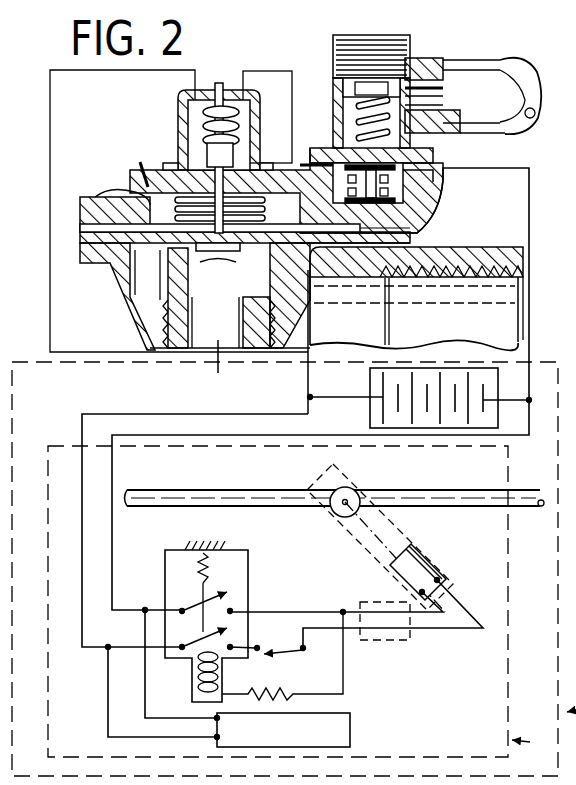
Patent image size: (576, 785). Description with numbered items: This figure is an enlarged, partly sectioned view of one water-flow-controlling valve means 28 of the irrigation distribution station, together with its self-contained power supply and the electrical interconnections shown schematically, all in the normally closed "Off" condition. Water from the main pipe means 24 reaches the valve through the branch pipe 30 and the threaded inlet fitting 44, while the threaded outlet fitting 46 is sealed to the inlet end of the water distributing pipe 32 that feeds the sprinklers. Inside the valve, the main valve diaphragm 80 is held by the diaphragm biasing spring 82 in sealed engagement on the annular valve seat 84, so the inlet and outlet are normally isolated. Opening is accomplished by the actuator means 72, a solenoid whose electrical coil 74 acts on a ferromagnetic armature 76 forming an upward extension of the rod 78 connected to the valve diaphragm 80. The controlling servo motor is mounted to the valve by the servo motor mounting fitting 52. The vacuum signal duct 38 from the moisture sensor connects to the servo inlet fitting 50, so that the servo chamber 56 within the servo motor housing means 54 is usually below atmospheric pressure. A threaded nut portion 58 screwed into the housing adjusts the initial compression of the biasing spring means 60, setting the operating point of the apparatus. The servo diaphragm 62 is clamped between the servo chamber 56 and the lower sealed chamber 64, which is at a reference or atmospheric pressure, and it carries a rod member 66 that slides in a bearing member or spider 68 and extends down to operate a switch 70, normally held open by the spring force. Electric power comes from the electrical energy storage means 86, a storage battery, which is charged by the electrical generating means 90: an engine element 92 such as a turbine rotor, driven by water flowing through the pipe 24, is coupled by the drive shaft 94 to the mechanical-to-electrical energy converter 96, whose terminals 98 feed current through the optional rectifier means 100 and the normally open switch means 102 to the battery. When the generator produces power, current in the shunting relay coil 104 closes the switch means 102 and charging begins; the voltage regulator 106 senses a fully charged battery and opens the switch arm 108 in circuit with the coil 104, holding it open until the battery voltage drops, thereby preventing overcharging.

The pressurized-liquid-transmission main pipe means 24 is at (223, 497).
The water-flow-controlling valve means 28 is at (110, 293).
The branch pipe 30 is at (227, 340).
The water distributing pipe 32 is at (482, 273).
The vacuum signal duct 38 is at (520, 82).
The threaded inlet fitting 44 is at (222, 283).
The threaded outlet fitting 46 is at (370, 293).
The servo inlet fitting 50 is at (443, 77).
The servo motor mounting fitting 52 is at (440, 173).
The servo motor housing means 54 is at (342, 147).
The servo chamber 56 is at (348, 90).
The threaded nut portion 58 is at (400, 37).
The biasing spring means 60 is at (407, 73).
The servo diaphragm 62 is at (317, 140).
The lower sealed chamber 64 is at (317, 160).
The rod member 66 is at (433, 215).
The bearing member or spider 68 is at (407, 182).
The switch 70 is at (420, 232).
The actuator means 72 is at (193, 115).
The electrical coil 74 is at (233, 93).
The ferromagnetic armature 76 is at (197, 143).
The rod 78 is at (208, 178).
The main valve diaphragm 80 is at (123, 197).
The diaphragm biasing spring 82 is at (218, 300).
The annular valve seat 84 is at (173, 283).
The electrical energy storage means 86 is at (503, 387).
The electrical generating means 90 is at (400, 530).
The engine element 92 is at (358, 488).
The drive shaft 94 is at (370, 530).
The mechanical-to-electrical energy converter 96 is at (437, 562).
The terminals 98 is at (440, 593).
The rectifier means 100 is at (387, 640).
The normally open switch means 102 is at (193, 593).
The shunting relay coil 104 is at (193, 692).
The voltage regulator 106 is at (353, 733).
The switch arm 108 is at (270, 655).